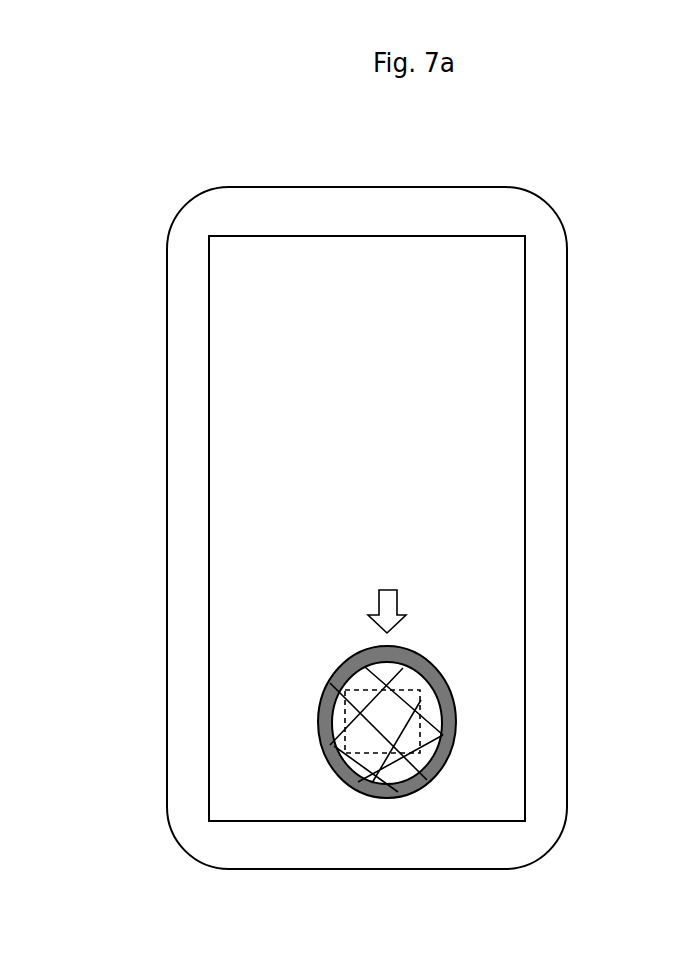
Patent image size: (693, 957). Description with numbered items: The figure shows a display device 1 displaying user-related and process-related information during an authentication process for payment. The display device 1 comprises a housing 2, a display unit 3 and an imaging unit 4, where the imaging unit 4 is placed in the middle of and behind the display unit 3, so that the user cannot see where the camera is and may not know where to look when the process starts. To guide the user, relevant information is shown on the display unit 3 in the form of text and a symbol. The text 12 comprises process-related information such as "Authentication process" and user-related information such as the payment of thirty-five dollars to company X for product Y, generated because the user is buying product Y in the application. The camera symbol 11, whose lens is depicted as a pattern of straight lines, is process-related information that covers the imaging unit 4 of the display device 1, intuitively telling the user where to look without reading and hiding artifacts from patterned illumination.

The display device 1 is at (573, 174).
The housing 2 is at (372, 187).
The display unit 3 is at (525, 260).
The imaging unit 4 is at (420, 713).
The process-related information 11 is at (222, 333).
The user-related and/or process-related information 12 is at (245, 543).